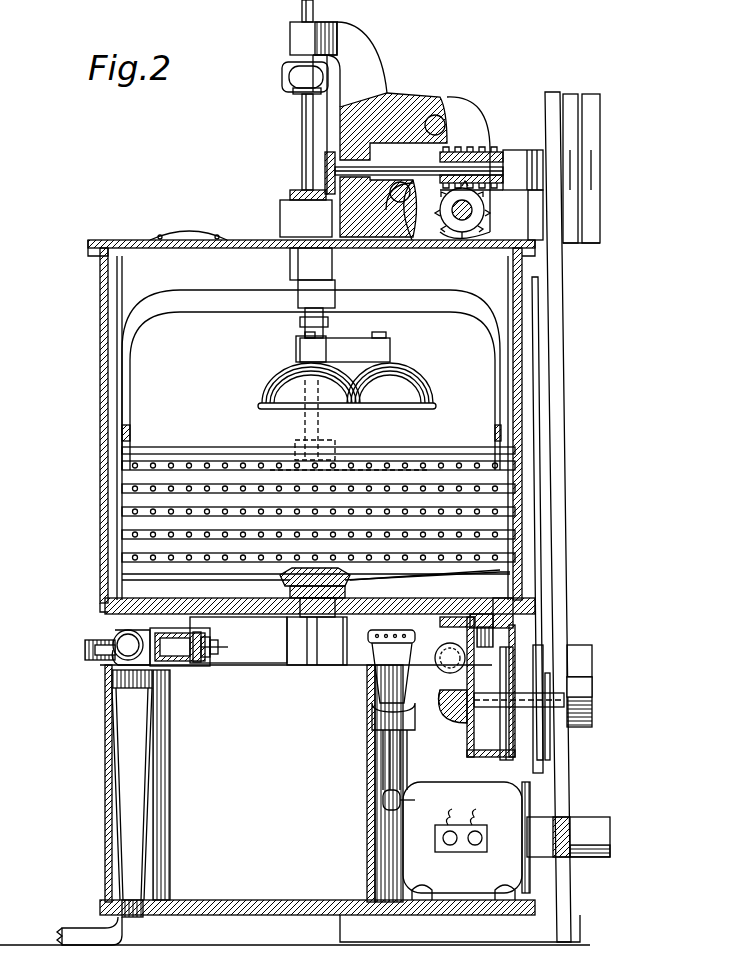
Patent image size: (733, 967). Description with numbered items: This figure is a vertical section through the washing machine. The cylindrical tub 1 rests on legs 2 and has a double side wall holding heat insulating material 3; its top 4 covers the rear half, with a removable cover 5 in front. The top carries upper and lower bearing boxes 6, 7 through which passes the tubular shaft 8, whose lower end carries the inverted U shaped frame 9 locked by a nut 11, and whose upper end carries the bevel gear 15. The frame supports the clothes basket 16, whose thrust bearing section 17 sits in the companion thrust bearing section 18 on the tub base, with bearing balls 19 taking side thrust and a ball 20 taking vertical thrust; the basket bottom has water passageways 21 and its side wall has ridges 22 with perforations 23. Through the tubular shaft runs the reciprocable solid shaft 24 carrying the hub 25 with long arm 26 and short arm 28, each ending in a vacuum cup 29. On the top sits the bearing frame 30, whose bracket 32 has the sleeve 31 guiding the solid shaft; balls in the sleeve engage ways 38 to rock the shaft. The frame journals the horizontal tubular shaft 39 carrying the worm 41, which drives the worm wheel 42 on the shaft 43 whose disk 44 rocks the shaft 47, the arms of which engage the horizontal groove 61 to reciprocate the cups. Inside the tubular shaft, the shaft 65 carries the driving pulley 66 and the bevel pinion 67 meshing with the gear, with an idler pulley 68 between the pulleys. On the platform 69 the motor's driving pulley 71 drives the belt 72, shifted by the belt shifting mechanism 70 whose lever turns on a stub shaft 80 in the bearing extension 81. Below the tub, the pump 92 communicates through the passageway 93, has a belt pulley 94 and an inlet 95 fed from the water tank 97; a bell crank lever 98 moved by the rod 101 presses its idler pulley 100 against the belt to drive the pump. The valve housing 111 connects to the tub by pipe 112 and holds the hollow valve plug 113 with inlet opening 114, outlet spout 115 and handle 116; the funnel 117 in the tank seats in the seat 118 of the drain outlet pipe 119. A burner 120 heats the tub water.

The cylindrical tub 1 is at (100, 428).
The legs 2 is at (336, 655).
The heat insulating material 3 is at (100, 345).
The top 4 is at (362, 241).
The removable cover 5 is at (222, 238).
The upper bearing box 6 is at (282, 216).
The lower bearing box 7 is at (290, 262).
The tubular shaft 8 is at (298, 275).
The inverted U shaped frame 9 is at (213, 312).
The nut 11 is at (328, 325).
The bevel gear 15 is at (292, 192).
The clothes basket 16 is at (522, 490).
The thrust bearing section 17 is at (326, 572).
The companion thrust bearing section 18 is at (238, 640).
The bearing balls 19 is at (350, 598).
The ball 20 is at (300, 628).
The water passageways 21 is at (430, 578).
The peripheral beads or ridges 22 is at (522, 555).
The perforations 23 is at (522, 530).
The solid shaft 24 is at (302, 128).
The hub 25 is at (296, 346).
The long arm 26 is at (344, 386).
The short arm 28 is at (390, 352).
The vacuum cup 29 is at (345, 400).
The bearing frame 30 is at (398, 103).
The sleeve 31 is at (290, 40).
The bracket 32 is at (355, 47).
The ways 38 is at (313, 10).
The horizontal tubular shaft 39 is at (497, 155).
The worm 41 is at (468, 150).
The worm wheel 42 is at (478, 228).
The shaft 43 is at (458, 232).
The disk 44 is at (425, 237).
The shaft 47 is at (437, 115).
The horizontal groove 61 is at (290, 78).
The shaft 65 is at (392, 163).
The driving pulley 66 is at (592, 132).
The bevel pinion 67 is at (325, 165).
The idler pulley 68 is at (573, 243).
The platform 69 is at (530, 908).
The belt shifting mechanism 70 is at (510, 868).
The driving pulley 71 is at (590, 822).
The belt 72 is at (563, 422).
The stub shaft 80 is at (402, 203).
The bearing extension 81 is at (395, 208).
The pump 92 is at (510, 635).
The passageway 93 is at (485, 612).
The belt pulley 94 is at (592, 697).
The inlet 95 is at (445, 650).
The water tank 97 is at (367, 834).
The bell crank lever 98 is at (552, 742).
The idler pulley 100 is at (592, 655).
The rod 101 is at (540, 645).
The valve housing 111 is at (200, 637).
The pipe 112 is at (103, 608).
The hollow valve plug 113 is at (182, 666).
The inlet opening 114 is at (186, 668).
The outlet spout 115 is at (110, 665).
The handle 116 is at (90, 650).
The funnel 117 is at (152, 790).
The seat 118 is at (162, 898).
The drain outlet pipe 119 is at (136, 930).
The burner 120 is at (385, 700).